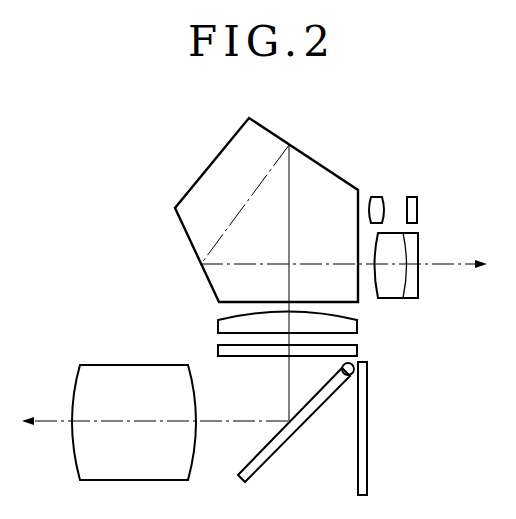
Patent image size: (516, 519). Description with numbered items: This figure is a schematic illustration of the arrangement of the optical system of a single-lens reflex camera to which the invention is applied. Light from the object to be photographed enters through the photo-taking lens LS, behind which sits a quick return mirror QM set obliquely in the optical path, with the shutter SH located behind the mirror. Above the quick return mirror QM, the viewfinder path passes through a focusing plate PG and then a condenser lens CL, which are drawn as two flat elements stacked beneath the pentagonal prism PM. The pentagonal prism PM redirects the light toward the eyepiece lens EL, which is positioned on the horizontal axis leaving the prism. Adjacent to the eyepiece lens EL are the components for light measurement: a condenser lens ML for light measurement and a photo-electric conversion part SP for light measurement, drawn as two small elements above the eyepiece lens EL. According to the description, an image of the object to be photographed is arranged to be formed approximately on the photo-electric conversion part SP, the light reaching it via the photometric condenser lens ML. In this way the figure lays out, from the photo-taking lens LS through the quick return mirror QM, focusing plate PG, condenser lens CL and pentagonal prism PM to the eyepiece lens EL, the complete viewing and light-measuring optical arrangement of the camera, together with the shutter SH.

The pentagonal prism PM is at (289, 144).
The condenser lens for light measurement ML is at (378, 196).
The photo-electric conversion part for light measurement SP is at (412, 196).
The eyepiece lens EL is at (391, 298).
The condenser lens CL is at (217, 328).
The focusing plate PG is at (217, 352).
The photo-taking lens LS is at (106, 366).
The quick return mirror QM is at (265, 460).
The shutter SH is at (368, 475).